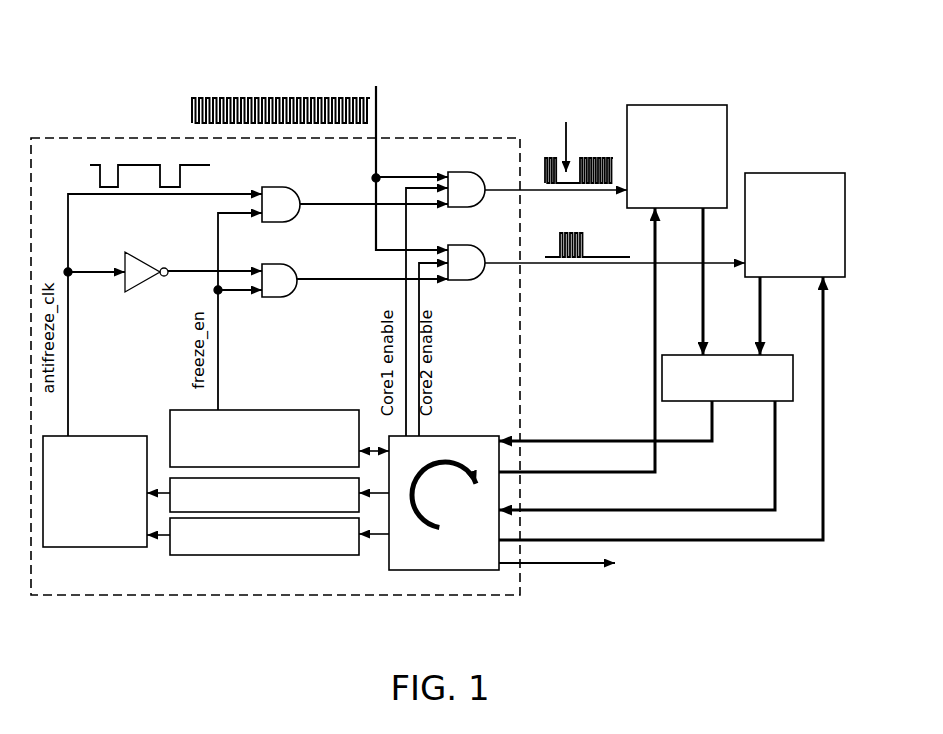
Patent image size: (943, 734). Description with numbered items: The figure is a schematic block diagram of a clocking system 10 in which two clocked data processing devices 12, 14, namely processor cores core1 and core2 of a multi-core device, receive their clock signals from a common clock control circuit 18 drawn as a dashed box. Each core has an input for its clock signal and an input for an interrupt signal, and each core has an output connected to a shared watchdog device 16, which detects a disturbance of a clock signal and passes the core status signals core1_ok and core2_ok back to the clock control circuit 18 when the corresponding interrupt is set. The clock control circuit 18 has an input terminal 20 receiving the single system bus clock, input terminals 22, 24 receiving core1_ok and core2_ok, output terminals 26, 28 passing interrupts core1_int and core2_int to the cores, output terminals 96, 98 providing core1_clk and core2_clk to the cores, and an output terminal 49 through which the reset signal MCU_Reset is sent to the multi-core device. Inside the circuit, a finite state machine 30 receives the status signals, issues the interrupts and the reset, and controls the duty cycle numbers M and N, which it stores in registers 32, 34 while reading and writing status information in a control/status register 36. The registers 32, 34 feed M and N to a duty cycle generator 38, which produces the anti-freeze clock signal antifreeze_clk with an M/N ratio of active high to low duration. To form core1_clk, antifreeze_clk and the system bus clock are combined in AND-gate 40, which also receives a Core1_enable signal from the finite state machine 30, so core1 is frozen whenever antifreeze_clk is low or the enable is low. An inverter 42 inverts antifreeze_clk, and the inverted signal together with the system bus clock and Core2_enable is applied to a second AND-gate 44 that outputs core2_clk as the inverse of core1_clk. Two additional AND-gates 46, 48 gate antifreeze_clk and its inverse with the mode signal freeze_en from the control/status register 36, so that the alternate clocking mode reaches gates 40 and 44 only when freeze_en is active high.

The clocking system 10 is at (462, 26).
The data processing device 12 is at (727, 122).
The data processing device 14 is at (768, 173).
The watchdog device 16 is at (758, 402).
The clock control circuit 18 is at (63, 138).
The input terminal 20 is at (377, 137).
The input terminal 22 is at (520, 440).
The input terminal 24 is at (522, 470).
The output terminal 26 is at (522, 510).
The output terminal 28 is at (523, 540).
The finite state machine 30 is at (452, 436).
The M register 32 is at (170, 476).
The N register 34 is at (290, 555).
The control/status register 36 is at (275, 410).
The duty cycle generator 38 is at (63, 547).
The AND-gate 40 is at (460, 172).
The inverter 42 is at (140, 252).
The AND-gate 44 is at (460, 245).
The AND-gate 46 is at (275, 187).
The AND-gate 48 is at (275, 264).
The output terminal 49 is at (521, 565).
The output terminal 96 is at (521, 190).
The output terminal 98 is at (520, 265).